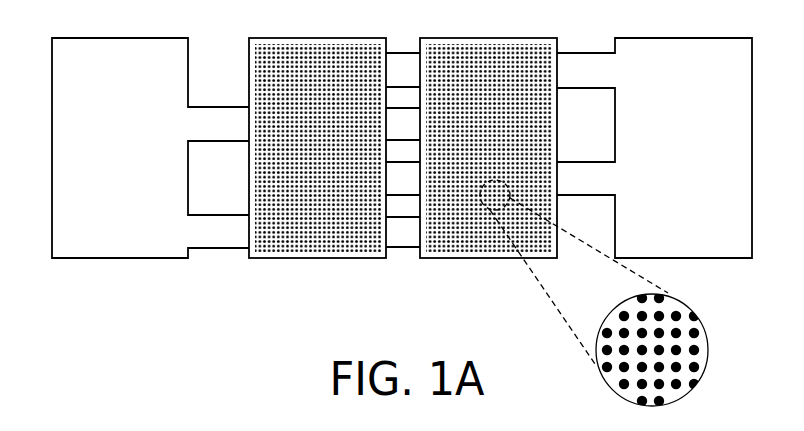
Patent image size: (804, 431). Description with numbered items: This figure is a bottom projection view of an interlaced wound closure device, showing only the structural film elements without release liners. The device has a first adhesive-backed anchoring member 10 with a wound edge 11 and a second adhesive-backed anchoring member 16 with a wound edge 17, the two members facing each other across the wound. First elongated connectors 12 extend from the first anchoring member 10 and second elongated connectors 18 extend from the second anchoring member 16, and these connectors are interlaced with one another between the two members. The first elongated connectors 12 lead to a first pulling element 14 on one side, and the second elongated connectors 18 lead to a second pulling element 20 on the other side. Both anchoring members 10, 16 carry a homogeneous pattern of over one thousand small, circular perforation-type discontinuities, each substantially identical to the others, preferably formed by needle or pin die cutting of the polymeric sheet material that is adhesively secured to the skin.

The first adhesive-backed anchoring member 10 is at (520, 50).
The wound edge 11 is at (418, 258).
The first elongated connectors 12 is at (390, 137).
The first pulling element 14 is at (105, 162).
The second adhesive-backed anchoring member 16 is at (258, 249).
The wound edge 17 is at (391, 38).
The second elongated connectors 18 is at (390, 80).
The second pulling element 20 is at (697, 162).